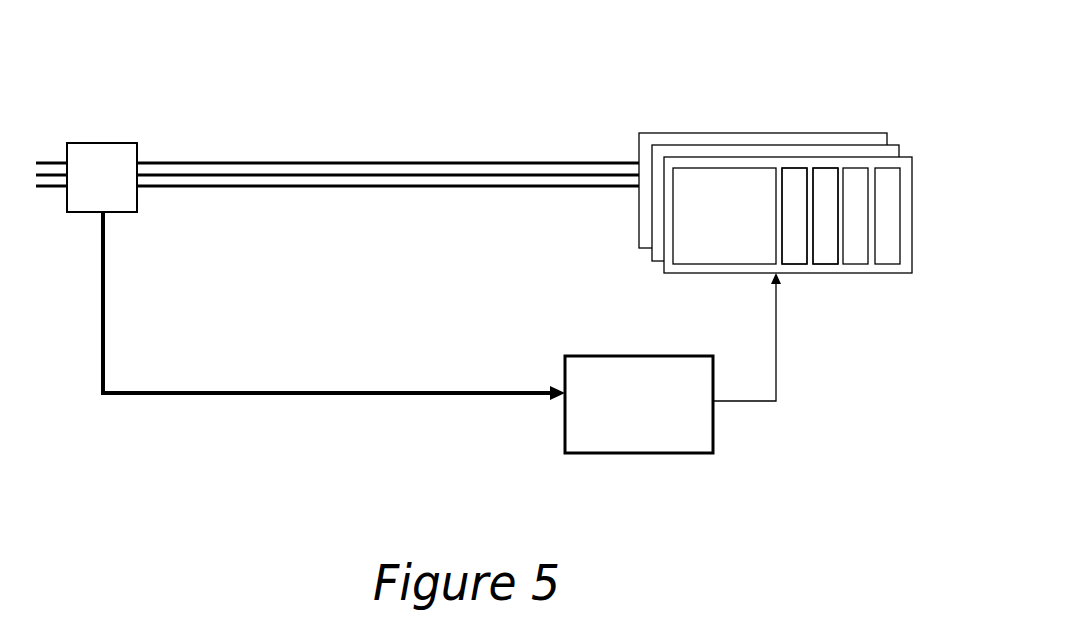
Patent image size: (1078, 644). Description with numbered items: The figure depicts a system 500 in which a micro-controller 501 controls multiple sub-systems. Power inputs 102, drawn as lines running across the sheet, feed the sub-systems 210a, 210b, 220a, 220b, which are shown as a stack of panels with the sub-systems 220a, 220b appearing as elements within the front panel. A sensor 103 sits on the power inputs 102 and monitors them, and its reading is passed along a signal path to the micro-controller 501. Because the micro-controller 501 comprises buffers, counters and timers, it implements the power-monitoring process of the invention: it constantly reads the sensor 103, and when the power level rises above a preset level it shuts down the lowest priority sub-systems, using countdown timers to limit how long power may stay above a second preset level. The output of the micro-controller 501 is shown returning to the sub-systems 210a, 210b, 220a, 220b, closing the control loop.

The system 500 is at (393, 100).
The power inputs 102 is at (239, 150).
The sensor 103 is at (106, 134).
The micro-controller 501 is at (609, 348).
The sub-system 210a is at (680, 121).
The sub-system 210b is at (652, 271).
The sub-system 220a is at (793, 193).
The sub-system 220b is at (825, 245).